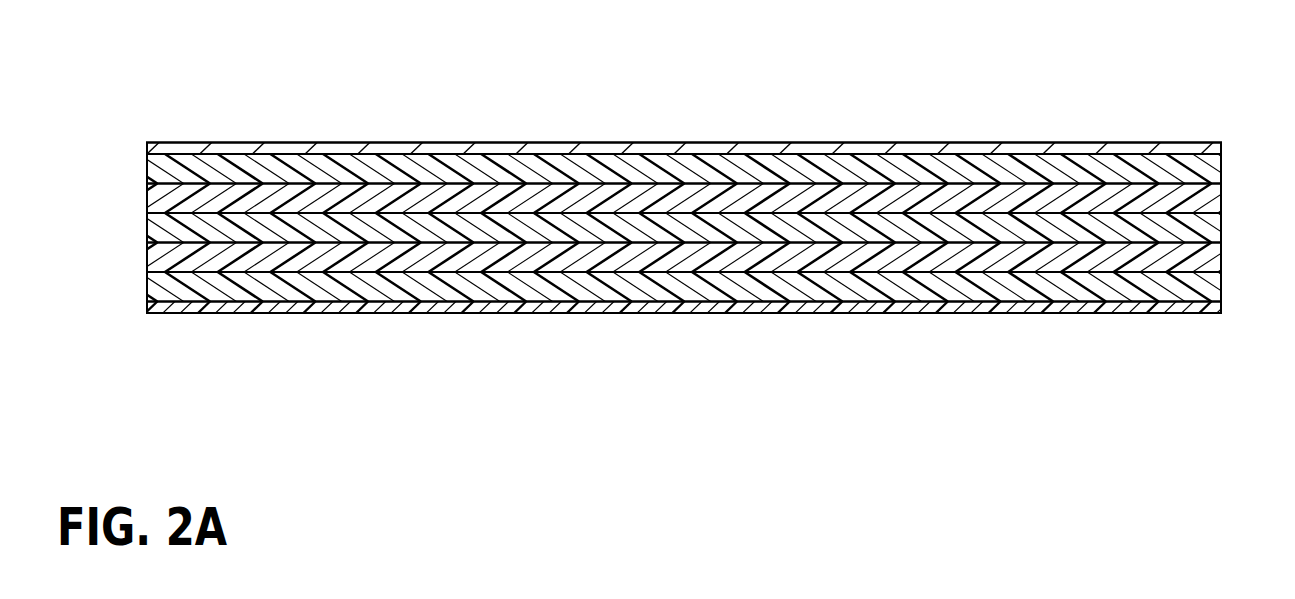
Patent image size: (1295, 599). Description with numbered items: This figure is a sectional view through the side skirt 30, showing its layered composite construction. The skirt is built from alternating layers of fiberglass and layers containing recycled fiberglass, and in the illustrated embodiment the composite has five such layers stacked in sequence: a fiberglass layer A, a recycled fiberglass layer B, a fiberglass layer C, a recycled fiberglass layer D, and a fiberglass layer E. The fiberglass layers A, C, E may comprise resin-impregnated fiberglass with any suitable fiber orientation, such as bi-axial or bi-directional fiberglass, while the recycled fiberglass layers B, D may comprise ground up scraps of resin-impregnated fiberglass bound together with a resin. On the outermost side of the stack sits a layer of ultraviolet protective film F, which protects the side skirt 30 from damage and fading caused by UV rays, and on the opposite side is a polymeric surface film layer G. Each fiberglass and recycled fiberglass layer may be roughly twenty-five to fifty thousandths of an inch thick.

The side skirt 30 is at (410, 118).
The ultraviolet protective film F is at (1221, 148).
The fiberglass layer A is at (1221, 166).
The recycled fiberglass layer B is at (1221, 200).
The fiberglass layer C is at (1221, 228).
The recycled fiberglass layer D is at (1221, 258).
The fiberglass layer E is at (1221, 288).
The polymeric surface film layer G is at (1221, 308).